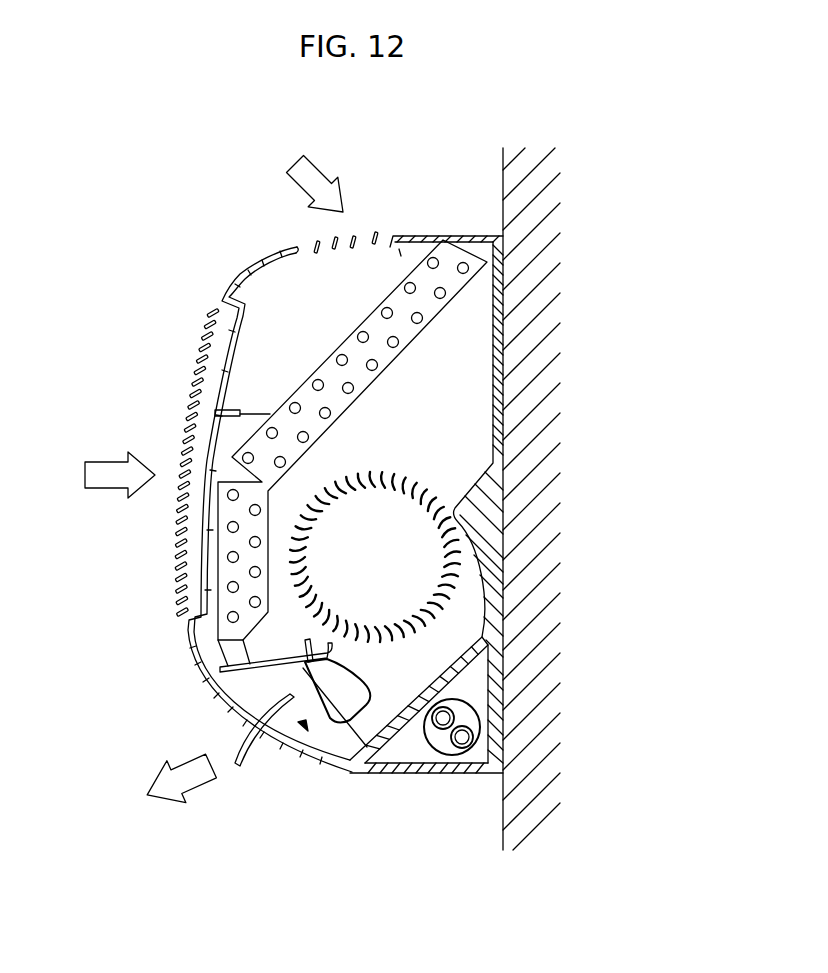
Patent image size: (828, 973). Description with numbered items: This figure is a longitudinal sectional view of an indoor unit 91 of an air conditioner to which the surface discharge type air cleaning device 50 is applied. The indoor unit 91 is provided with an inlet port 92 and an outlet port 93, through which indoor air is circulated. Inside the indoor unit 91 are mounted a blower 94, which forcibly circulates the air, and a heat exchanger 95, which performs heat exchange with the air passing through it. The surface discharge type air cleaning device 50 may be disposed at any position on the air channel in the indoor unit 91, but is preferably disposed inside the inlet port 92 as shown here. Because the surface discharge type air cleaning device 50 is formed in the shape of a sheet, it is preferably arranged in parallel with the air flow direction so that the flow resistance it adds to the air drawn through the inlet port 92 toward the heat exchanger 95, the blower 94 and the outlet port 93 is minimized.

The indoor unit 91 is at (237, 231).
The inlet port 92 is at (362, 237).
The heat exchanger 95 is at (355, 347).
The surface discharge type air cleaning device 50 is at (212, 412).
The blower 94 is at (450, 573).
The outlet port 93 is at (288, 743).